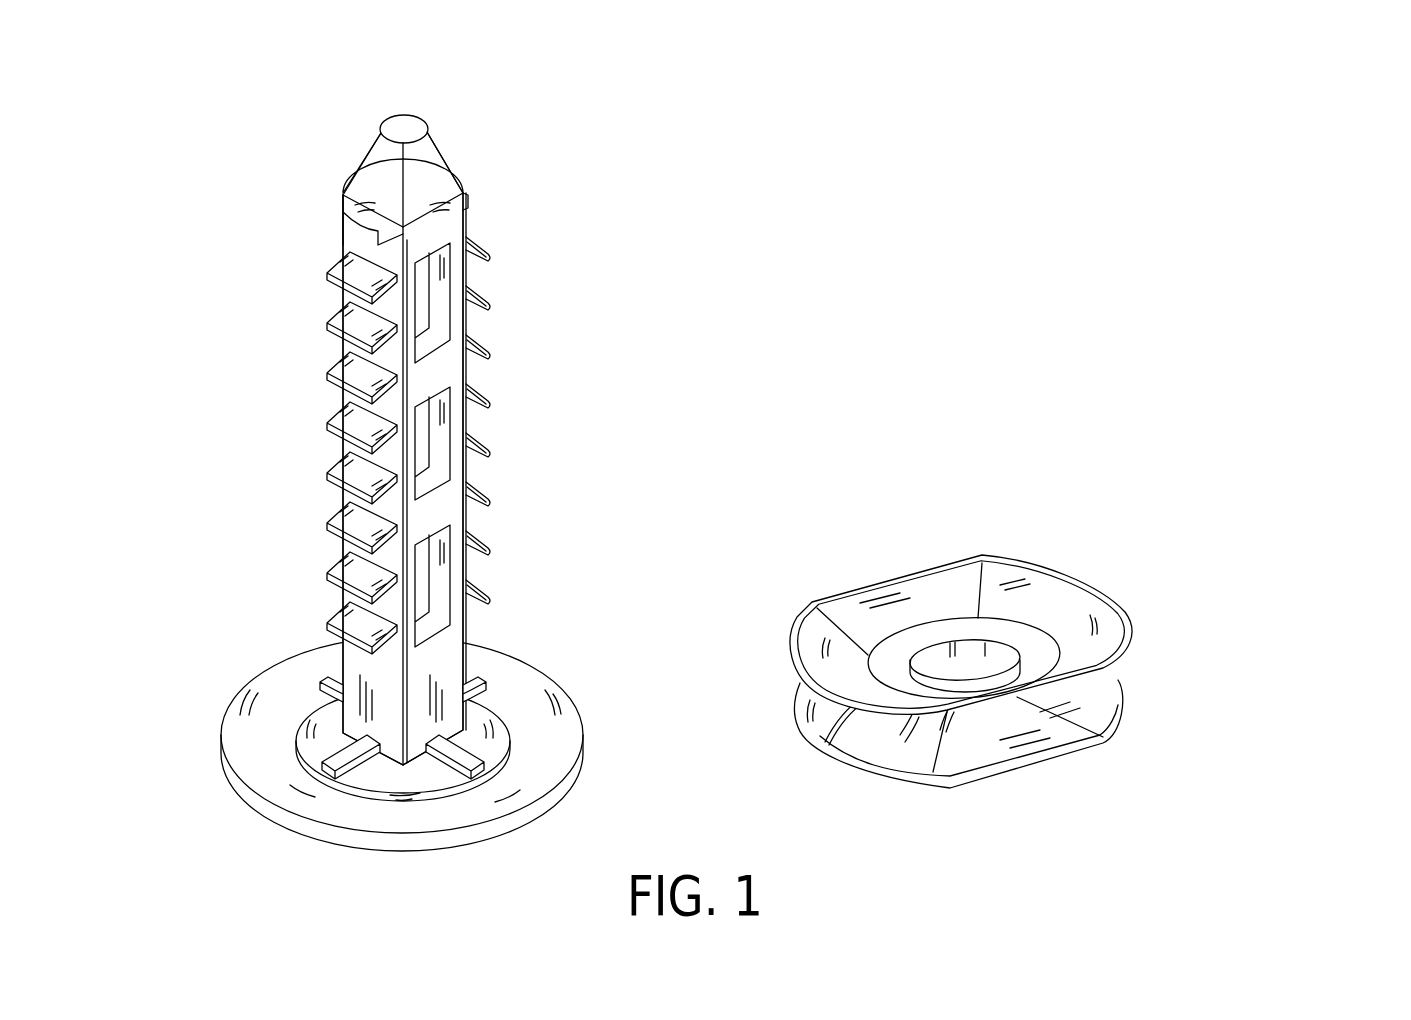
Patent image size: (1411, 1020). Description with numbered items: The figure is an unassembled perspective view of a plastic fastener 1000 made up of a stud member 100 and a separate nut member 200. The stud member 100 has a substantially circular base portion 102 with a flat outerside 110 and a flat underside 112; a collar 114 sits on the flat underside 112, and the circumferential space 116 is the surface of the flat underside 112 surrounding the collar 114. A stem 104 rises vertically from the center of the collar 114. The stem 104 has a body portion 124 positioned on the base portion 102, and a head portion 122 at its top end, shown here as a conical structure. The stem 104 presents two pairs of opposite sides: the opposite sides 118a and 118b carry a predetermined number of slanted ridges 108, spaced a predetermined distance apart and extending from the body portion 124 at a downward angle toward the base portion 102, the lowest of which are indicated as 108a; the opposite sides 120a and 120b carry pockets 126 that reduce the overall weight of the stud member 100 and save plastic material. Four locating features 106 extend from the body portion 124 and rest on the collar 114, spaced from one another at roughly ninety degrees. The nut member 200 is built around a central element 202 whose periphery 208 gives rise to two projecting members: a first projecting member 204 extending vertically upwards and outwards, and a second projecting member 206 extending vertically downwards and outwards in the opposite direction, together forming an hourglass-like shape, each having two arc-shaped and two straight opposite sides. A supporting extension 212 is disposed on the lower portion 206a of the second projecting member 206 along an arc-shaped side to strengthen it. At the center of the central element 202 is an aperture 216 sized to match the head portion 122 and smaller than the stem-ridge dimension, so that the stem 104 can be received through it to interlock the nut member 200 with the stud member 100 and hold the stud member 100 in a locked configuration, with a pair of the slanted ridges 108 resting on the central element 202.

The fastener 1000 is at (1193, 150).
The stud member 100 is at (257, 167).
The base portion 102 is at (228, 768).
The stem 104 is at (290, 478).
The locating features 106 is at (468, 682).
The slanted ridges 108 is at (488, 305).
The lowermost barbs 108a is at (488, 606).
The flat outerside 110 is at (530, 822).
The flat underside 112 is at (545, 750).
The collar 114 is at (503, 720).
The circumferential space 116 is at (423, 793).
The opposite side 118a is at (470, 218).
The opposite side 118b is at (352, 232).
The opposite side 120a is at (465, 500).
The opposite side 120b is at (340, 555).
The head portion 122 is at (407, 133).
The body portion 124 is at (330, 705).
The pockets 126 is at (445, 315).
The nut member 200 is at (1192, 583).
The central element 202 is at (942, 628).
The first projecting member 204 is at (1055, 568).
The second projecting member 206 is at (1120, 718).
The lower portion 206a is at (887, 748).
The periphery 208 is at (1062, 656).
The supporting extension 212 is at (825, 748).
The aperture 216 is at (965, 680).